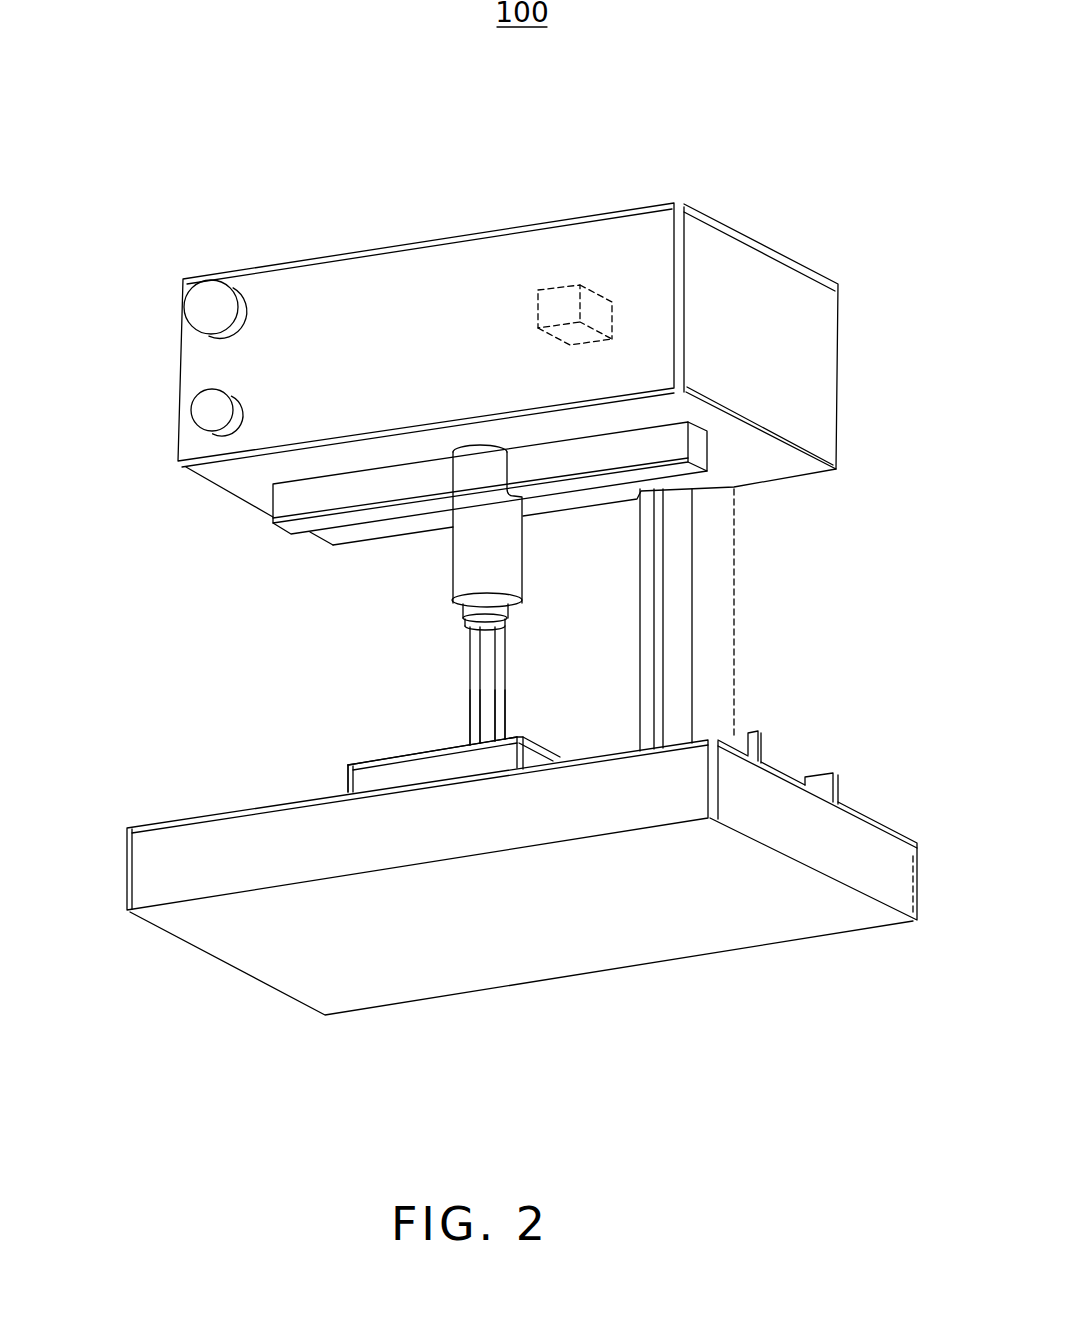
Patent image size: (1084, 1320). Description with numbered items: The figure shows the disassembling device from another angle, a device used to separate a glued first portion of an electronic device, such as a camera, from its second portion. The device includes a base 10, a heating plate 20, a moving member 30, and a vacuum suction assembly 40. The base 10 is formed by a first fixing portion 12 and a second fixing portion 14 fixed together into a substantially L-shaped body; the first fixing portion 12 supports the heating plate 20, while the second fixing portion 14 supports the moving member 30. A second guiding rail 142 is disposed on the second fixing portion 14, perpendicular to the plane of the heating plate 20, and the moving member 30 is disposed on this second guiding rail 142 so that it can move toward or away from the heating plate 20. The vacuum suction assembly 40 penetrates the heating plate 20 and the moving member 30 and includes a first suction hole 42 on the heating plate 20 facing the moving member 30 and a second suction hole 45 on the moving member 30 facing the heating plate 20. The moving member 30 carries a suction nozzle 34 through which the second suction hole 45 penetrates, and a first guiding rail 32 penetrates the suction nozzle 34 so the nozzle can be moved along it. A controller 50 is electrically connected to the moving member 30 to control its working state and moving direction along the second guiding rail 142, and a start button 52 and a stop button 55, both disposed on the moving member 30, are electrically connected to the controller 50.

The base 10 is at (522, 752).
The first fixing portion 12 is at (272, 837).
The second fixing portion 14 is at (491, 737).
The second guiding rail 142 is at (485, 677).
The heating plate 20 is at (437, 770).
The moving member 30 is at (813, 362).
The first guiding rail 32 is at (660, 453).
The suction nozzle 34 is at (505, 547).
The vacuum suction assembly 40 is at (678, 674).
The first suction hole 42 is at (505, 734).
The second suction hole 45 is at (495, 632).
The controller 50 is at (561, 300).
The start button 52 is at (212, 411).
The stop button 55 is at (202, 309).